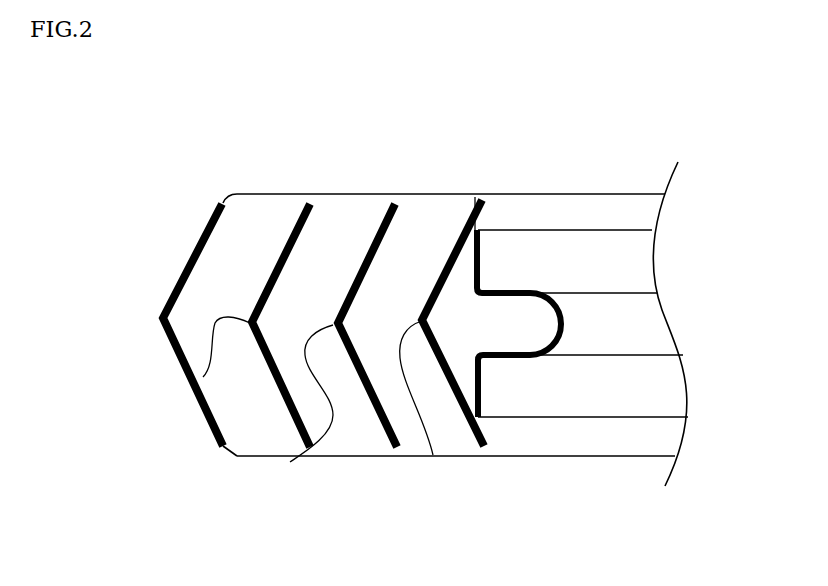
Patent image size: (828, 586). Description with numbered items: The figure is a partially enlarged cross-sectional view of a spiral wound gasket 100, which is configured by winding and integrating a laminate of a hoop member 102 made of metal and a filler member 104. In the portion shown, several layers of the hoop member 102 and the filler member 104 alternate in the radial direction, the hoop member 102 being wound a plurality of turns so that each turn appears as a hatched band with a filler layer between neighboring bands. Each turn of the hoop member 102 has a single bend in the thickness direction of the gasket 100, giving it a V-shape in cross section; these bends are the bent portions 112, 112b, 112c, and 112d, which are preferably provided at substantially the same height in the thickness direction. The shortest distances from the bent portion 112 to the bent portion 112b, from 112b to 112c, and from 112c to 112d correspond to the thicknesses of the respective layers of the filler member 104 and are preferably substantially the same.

The spiral wound gasket 100 is at (630, 158).
The hoop member 102 is at (220, 203).
The filler member 104 is at (270, 207).
The bent portion 112 is at (162, 322).
The bent portion 112b is at (203, 377).
The bent portion 112c is at (290, 462).
The bent portion 112d is at (433, 455).